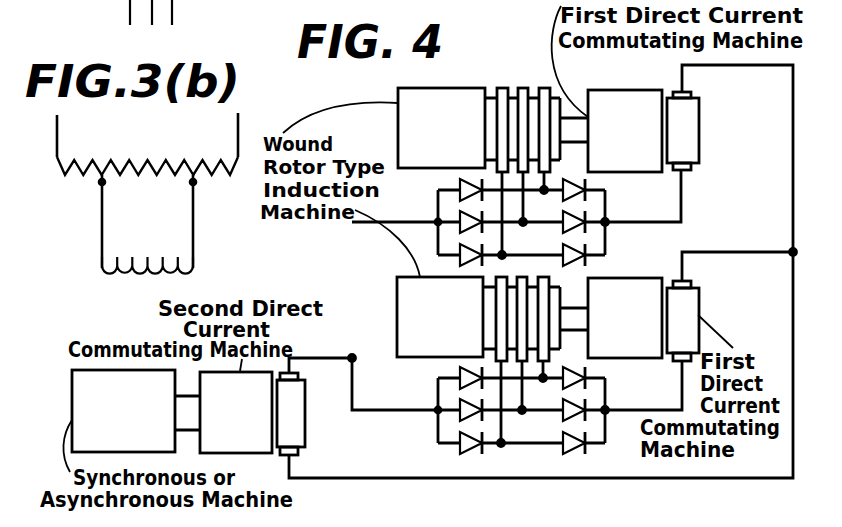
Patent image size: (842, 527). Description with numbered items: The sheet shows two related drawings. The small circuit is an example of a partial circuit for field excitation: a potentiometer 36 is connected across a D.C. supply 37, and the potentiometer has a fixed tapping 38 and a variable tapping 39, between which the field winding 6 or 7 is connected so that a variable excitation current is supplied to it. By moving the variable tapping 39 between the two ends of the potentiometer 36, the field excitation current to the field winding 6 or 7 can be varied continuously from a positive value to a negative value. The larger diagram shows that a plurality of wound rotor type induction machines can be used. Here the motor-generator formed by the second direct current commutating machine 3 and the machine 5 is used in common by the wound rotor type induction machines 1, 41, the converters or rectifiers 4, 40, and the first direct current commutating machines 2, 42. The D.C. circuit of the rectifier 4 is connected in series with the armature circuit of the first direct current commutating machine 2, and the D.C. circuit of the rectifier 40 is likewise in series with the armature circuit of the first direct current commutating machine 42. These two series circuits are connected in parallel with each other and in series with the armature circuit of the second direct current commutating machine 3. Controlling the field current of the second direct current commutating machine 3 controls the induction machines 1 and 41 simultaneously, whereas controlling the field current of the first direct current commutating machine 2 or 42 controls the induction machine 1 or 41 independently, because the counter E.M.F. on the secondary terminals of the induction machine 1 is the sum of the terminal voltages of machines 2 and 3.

In FIG. 4, the wound rotor type induction machine 1 is at (493, 130).
In FIG. 4, the first direct current commutating machine 2 is at (643, 131).
In FIG. 4, the second direct current commutating machine 3 is at (252, 413).
In FIG. 4, the rectifier 4 is at (541, 219).
In FIG. 4, the motor-generator machine 5 is at (136, 411).
In FIG. 3B, the field winding 6 is at (123, 283).
In FIG. 3B, the field winding 7 is at (100, 271).
In FIG. 3B, the potentiometer 36 is at (196, 180).
In FIG. 3B, the D.C. supply 37 is at (238, 127).
In FIG. 3B, the fixed tapping 38 is at (99, 180).
In FIG. 3B, the variable tapping 39 is at (196, 185).
In FIG. 4, the rectifier 40 is at (548, 407).
In FIG. 4, the wound rotor type induction machine 41 is at (492, 319).
In FIG. 4, the first direct current commutating machine 42 is at (643, 319).